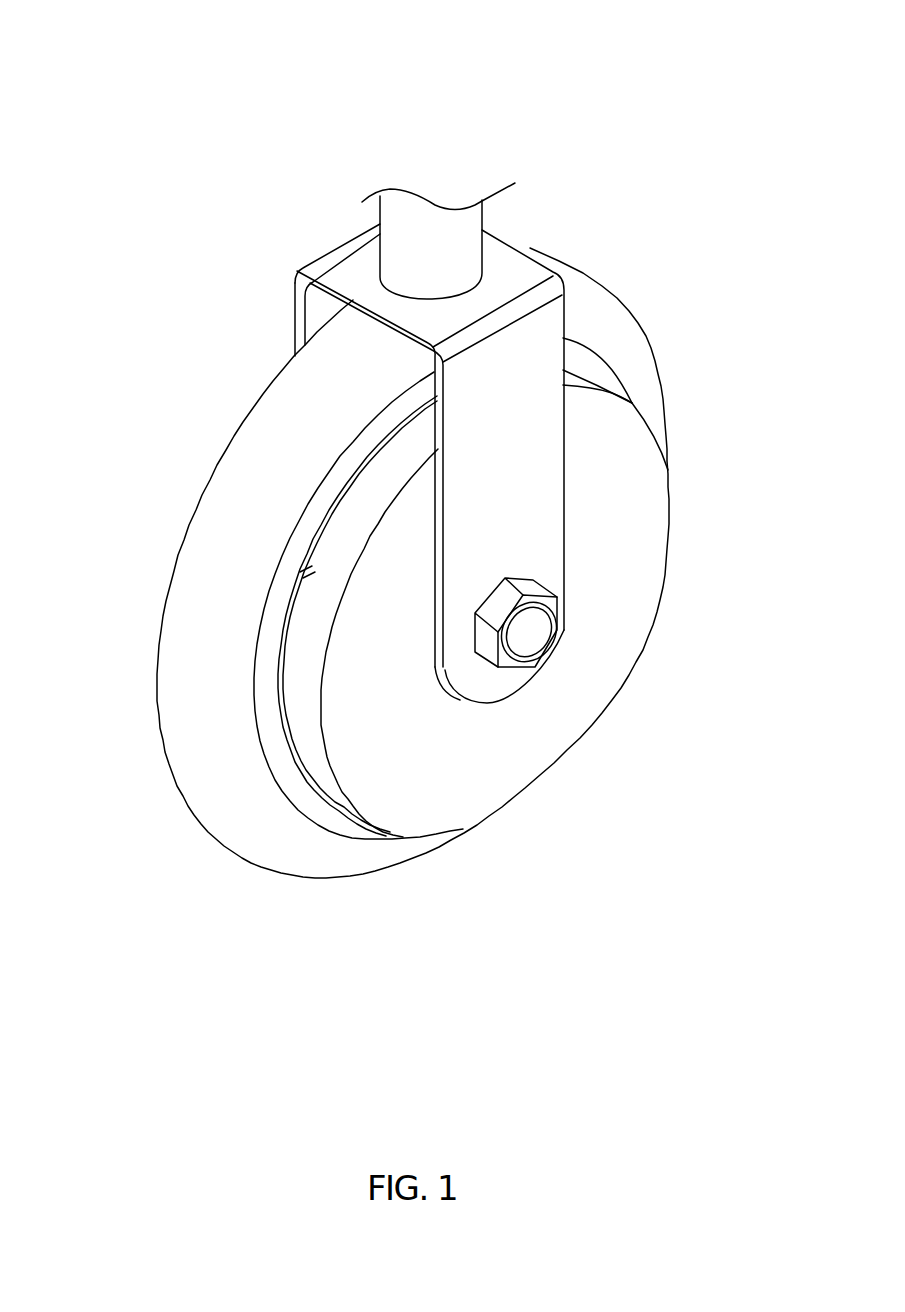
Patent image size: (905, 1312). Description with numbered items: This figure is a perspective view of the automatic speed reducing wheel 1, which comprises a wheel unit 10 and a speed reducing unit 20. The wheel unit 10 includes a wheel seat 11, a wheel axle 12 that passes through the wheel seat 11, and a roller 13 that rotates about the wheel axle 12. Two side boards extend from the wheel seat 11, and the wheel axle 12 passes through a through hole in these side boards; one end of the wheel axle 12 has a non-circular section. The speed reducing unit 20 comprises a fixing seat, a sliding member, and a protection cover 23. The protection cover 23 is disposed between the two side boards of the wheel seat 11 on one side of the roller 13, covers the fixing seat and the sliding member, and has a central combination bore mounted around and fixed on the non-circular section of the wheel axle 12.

The automatic speed reducing wheel 1 is at (730, 118).
The wheel unit 10 is at (425, 563).
The wheel seat 11 is at (510, 268).
The wheel axle 12 is at (532, 627).
The roller 13 is at (210, 580).
The speed reducing unit 20 is at (540, 609).
The protection cover 23 is at (625, 542).